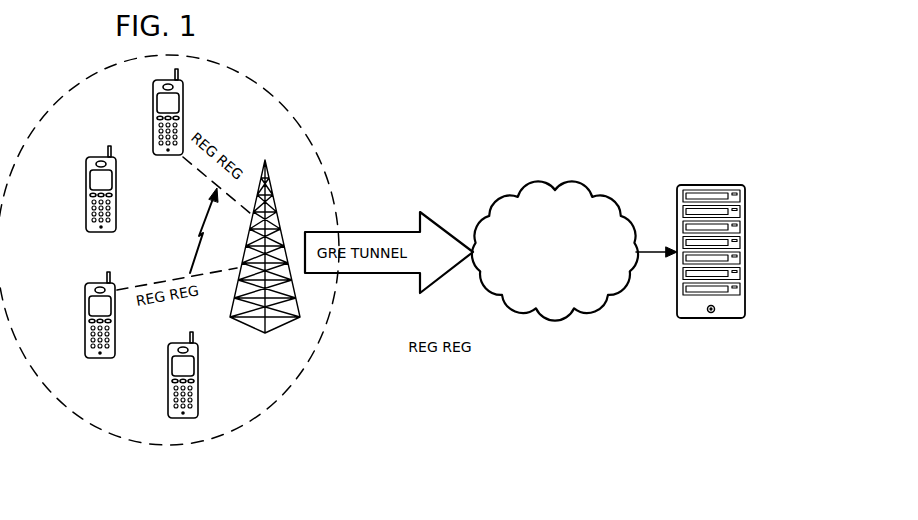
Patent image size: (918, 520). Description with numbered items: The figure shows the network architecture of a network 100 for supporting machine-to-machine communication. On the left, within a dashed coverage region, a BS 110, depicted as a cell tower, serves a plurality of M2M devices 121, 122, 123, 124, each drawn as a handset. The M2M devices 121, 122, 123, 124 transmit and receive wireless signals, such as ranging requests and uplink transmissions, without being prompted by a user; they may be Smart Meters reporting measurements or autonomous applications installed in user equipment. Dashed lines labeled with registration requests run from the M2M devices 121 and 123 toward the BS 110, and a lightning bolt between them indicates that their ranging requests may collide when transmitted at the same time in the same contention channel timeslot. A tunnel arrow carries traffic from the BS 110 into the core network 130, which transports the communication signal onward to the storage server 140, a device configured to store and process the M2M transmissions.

The network 100 is at (683, 128).
The BS 110 is at (247, 330).
The M2M device 121 is at (153, 120).
The M2M device 122 is at (86, 195).
The M2M device 123 is at (85, 318).
The M2M device 124 is at (168, 380).
The core network 130 is at (575, 314).
The storage server 140 is at (715, 319).